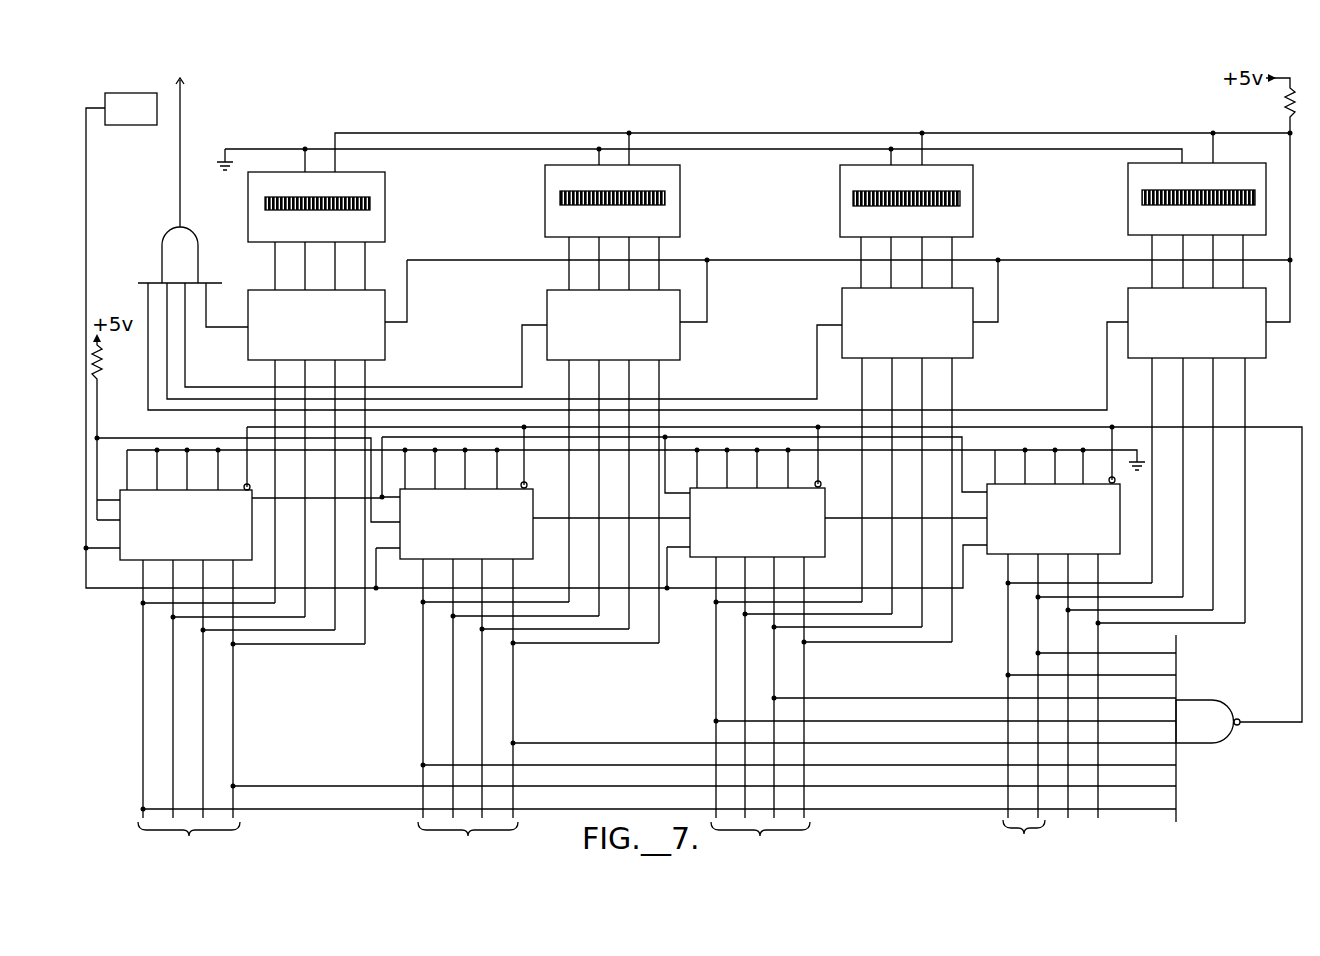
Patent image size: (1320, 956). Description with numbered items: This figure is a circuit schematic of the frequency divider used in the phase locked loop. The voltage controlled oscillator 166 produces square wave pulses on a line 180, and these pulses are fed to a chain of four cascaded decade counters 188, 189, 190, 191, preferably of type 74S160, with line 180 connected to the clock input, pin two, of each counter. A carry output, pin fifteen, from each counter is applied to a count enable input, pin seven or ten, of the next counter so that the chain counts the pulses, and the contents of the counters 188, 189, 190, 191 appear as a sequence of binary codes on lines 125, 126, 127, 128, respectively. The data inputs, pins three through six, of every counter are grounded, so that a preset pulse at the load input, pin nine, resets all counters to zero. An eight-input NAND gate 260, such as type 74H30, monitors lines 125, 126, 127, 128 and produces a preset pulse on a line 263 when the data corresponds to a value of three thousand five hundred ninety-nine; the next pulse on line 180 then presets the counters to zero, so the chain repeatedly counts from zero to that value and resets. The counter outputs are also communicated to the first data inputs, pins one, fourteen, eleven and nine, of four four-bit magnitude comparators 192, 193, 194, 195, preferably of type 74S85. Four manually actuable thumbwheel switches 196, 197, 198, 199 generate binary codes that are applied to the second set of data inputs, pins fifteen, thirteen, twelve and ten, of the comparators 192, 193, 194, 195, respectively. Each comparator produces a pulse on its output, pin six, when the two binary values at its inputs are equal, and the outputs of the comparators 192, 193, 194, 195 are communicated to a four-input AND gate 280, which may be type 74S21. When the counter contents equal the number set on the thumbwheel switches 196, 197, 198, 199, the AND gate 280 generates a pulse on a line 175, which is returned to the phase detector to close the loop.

The voltage controlled oscillator 166 is at (118, 93).
The line 175 is at (180, 96).
The line 180 is at (86, 158).
The four-input AND gate 280 is at (162, 247).
The thumbwheel switch 199 is at (385, 172).
The thumbwheel switch 198 is at (680, 168).
The thumbwheel switch 197 is at (968, 168).
The thumbwheel switch 196 is at (1244, 163).
The comparator 195 is at (385, 350).
The comparator 194 is at (684, 350).
The comparator 193 is at (973, 348).
The comparator 192 is at (1266, 346).
The counter 191 is at (125, 563).
The counter 190 is at (533, 566).
The counter 189 is at (822, 563).
The counter 188 is at (1118, 560).
The eight-input NAND gate 260 is at (1195, 700).
The line 263 is at (1302, 510).
The line 128 is at (189, 840).
The line 127 is at (468, 840).
The line 126 is at (760, 840).
The line 125 is at (1026, 837).